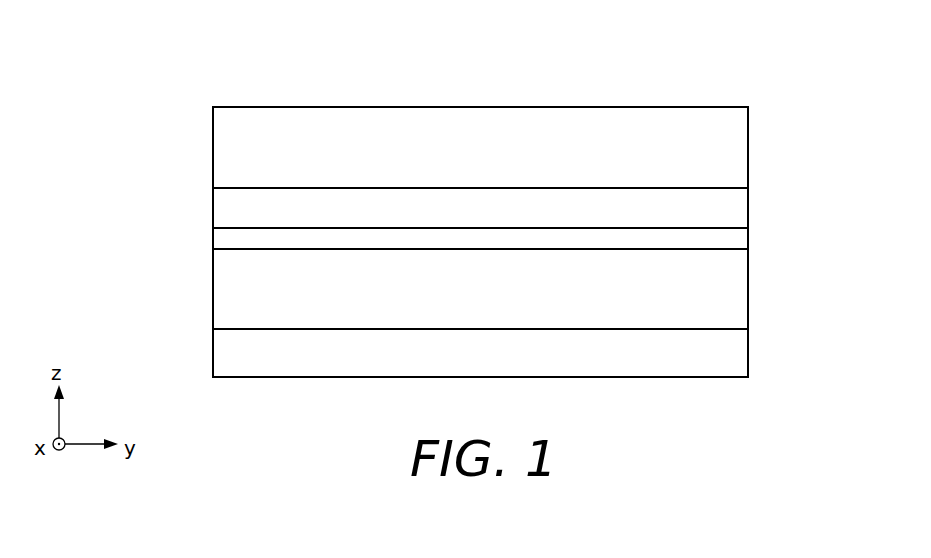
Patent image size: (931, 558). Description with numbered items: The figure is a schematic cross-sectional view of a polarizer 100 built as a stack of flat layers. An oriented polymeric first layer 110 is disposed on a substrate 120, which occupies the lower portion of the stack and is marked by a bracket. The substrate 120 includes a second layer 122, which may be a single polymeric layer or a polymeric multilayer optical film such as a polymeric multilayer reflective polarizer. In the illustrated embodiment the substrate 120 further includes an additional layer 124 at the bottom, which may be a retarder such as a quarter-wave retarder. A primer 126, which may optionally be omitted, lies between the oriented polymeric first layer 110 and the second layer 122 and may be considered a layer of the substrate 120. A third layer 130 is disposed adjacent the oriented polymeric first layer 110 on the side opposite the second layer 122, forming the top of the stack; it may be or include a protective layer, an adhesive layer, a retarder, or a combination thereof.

The polarizer 100 is at (172, 44).
The third layer 130 is at (727, 151).
The oriented polymeric first layer 110 is at (228, 204).
The primer 126 is at (228, 237).
The second layer 122 is at (228, 292).
The additional layer 124 is at (228, 357).
The substrate 120 is at (759, 228).